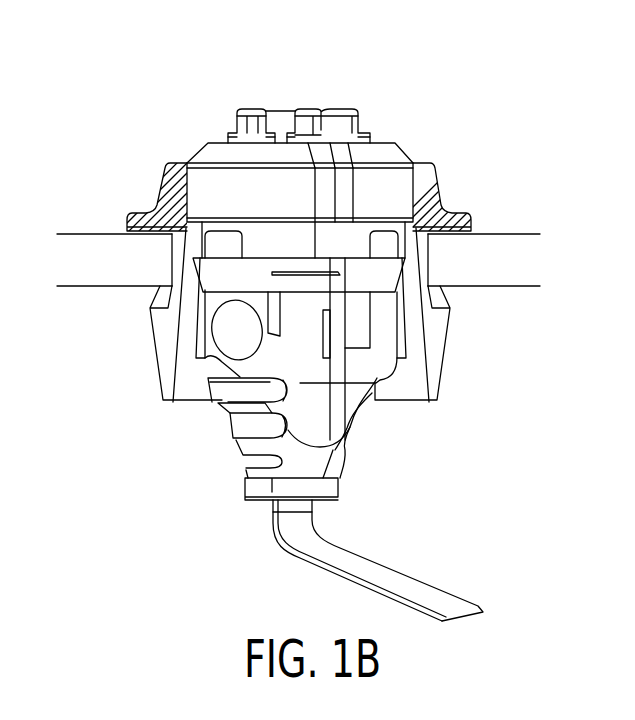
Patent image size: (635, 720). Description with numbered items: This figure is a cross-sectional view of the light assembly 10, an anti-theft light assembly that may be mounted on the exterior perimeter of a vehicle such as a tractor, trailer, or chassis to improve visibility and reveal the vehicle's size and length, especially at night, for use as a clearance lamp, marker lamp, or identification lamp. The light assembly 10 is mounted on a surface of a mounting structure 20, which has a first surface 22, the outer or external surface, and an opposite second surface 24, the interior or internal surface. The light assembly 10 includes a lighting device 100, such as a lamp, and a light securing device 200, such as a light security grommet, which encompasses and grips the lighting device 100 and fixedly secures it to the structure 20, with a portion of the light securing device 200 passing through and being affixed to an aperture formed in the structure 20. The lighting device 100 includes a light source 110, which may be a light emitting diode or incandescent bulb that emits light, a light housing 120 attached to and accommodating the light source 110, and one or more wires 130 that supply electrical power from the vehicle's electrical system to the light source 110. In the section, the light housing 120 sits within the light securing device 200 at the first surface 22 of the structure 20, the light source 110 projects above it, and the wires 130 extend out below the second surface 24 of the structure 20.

The light assembly 10 is at (498, 118).
The mounting structure 20 is at (573, 197).
The first surface 22 is at (510, 234).
The second surface 24 is at (508, 286).
The lighting device 100 is at (145, 37).
The light source 110 is at (252, 113).
The light housing 120 is at (225, 190).
The wires 130 is at (178, 142).
The light securing device 200 is at (156, 338).